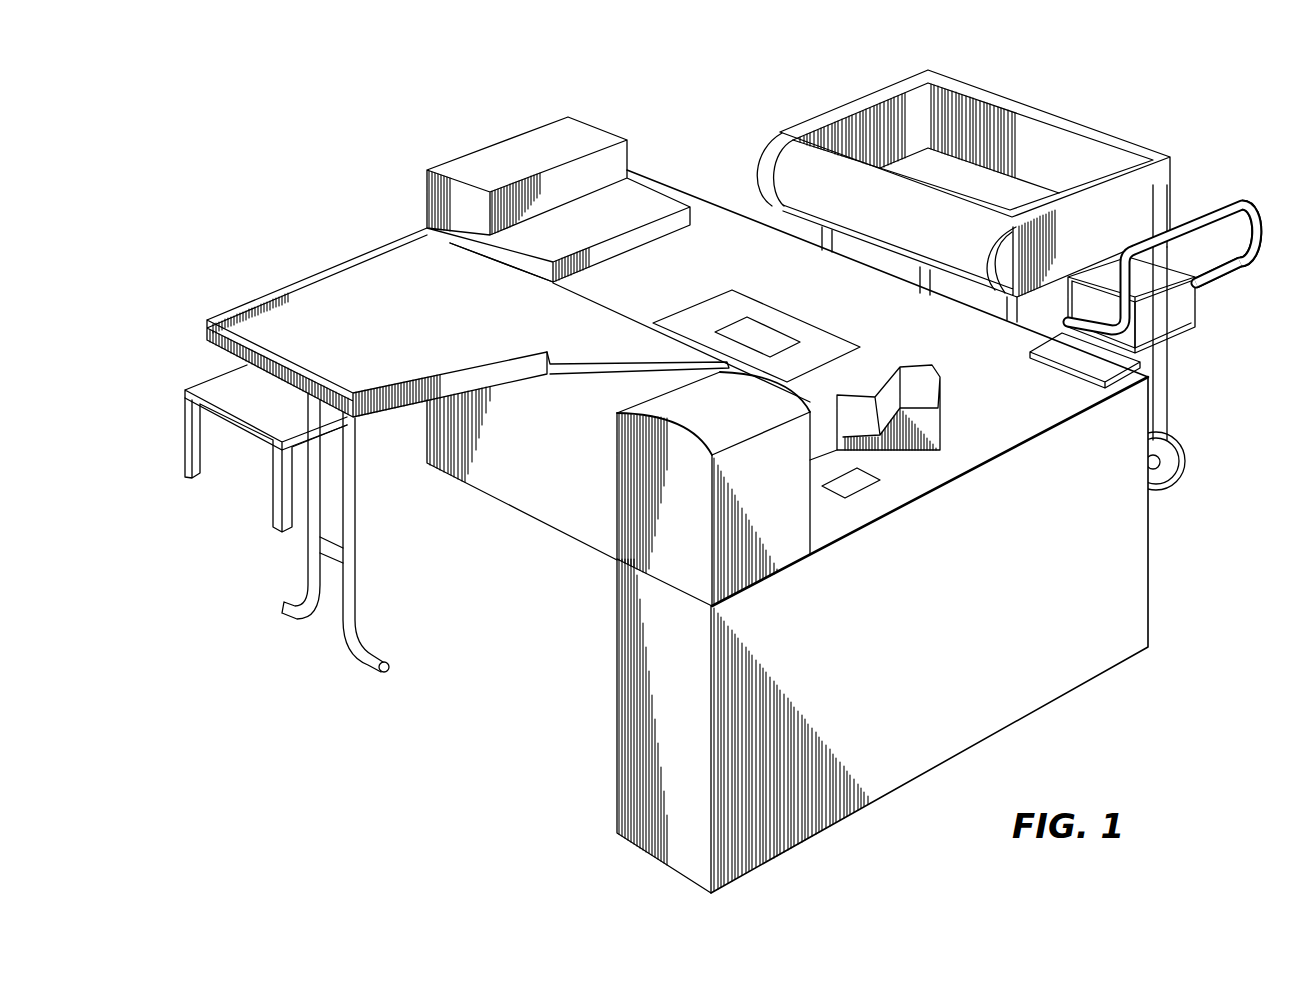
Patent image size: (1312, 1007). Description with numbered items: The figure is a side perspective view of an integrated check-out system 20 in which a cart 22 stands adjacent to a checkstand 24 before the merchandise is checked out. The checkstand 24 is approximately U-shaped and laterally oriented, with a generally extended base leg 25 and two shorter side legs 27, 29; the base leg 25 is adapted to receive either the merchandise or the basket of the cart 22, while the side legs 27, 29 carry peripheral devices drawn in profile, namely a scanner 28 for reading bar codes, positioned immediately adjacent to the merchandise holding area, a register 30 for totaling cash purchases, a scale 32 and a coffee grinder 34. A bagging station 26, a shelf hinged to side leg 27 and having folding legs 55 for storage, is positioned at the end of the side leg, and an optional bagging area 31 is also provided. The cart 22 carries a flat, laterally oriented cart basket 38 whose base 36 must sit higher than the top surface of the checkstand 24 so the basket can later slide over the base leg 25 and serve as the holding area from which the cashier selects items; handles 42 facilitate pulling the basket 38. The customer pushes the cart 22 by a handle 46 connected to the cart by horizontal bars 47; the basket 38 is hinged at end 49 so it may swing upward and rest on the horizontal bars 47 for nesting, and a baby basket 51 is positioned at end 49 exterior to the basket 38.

The integrated check-out system 20 is at (1199, 489).
The cart 22 is at (1185, 212).
The checkstand 24 is at (819, 302).
The base leg 25 is at (712, 232).
The bagging station 26 is at (419, 319).
The side leg 27 is at (632, 850).
The scanner 28 is at (838, 360).
The side leg 29 is at (196, 361).
The register 30 is at (938, 435).
The optional bagging area 31 is at (237, 402).
The scale 32 is at (585, 220).
The coffee grinder 34 is at (755, 492).
The base of cart basket 36 is at (940, 184).
The cart basket 38 is at (863, 112).
The handles 42 is at (987, 263).
The handle 46 is at (1227, 205).
The horizontal bars 47 is at (1222, 267).
The end of basket 49 is at (1165, 222).
The baby basket 51 is at (1184, 330).
The folding legs 55 is at (358, 613).